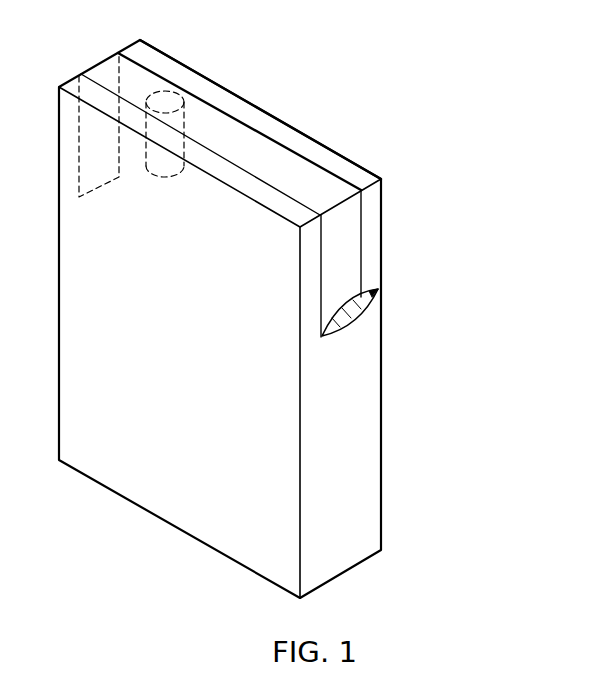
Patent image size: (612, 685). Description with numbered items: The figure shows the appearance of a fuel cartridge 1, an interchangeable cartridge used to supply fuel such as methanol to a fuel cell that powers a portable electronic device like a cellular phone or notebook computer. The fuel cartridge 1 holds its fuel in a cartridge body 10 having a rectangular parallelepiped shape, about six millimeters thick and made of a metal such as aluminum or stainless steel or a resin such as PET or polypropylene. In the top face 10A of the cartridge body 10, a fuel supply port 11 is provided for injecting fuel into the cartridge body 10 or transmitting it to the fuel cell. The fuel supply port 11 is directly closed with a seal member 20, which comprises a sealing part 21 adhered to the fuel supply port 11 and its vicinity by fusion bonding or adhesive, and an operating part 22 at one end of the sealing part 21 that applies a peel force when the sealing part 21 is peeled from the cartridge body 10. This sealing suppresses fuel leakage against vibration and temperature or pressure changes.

The fuel cartridge 1 is at (514, 63).
The cartridge body 10 is at (107, 472).
The top face 10A is at (148, 52).
The fuel supply port 11 is at (237, 92).
The seal member 20 is at (415, 263).
The sealing part 21 is at (347, 247).
The operating part 22 is at (372, 308).